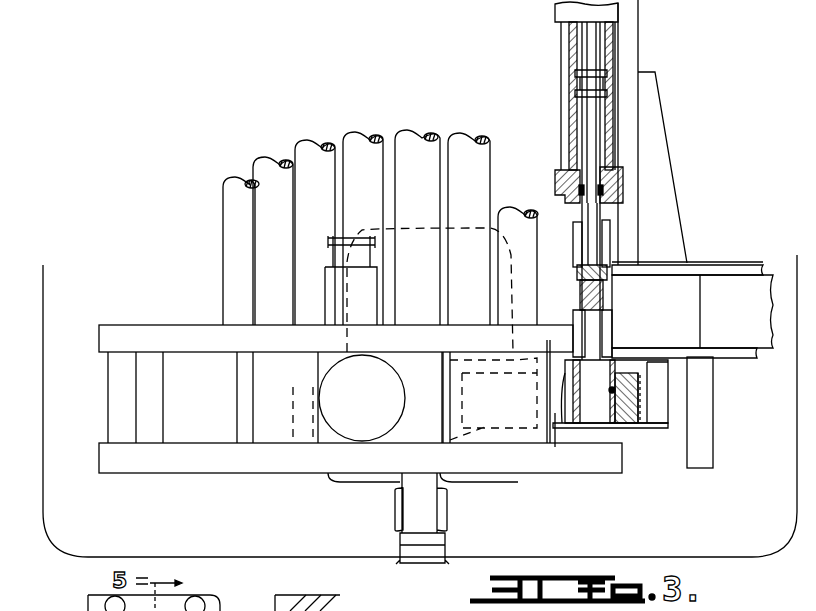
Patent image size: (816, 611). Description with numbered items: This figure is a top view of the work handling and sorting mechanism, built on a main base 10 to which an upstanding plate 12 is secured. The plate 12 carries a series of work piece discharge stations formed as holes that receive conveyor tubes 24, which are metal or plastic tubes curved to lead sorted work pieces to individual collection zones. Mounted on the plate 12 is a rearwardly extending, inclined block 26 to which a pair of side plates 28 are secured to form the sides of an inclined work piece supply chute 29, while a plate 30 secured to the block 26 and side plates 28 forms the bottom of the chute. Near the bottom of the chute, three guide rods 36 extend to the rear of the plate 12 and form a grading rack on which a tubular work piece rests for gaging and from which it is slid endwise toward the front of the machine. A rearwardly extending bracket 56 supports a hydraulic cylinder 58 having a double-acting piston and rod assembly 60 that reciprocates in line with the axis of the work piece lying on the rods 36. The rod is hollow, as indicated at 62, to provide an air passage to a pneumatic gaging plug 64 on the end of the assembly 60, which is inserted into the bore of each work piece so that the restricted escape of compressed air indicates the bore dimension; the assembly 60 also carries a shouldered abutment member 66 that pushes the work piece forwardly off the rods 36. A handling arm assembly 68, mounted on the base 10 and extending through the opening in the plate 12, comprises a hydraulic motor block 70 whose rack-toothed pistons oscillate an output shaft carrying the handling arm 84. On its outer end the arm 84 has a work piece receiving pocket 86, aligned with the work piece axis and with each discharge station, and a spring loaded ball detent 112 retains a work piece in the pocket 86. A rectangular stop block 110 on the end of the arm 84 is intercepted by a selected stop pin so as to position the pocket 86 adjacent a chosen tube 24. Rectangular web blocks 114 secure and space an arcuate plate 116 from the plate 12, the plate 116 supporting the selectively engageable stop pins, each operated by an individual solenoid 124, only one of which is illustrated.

The main base 10 is at (420, 406).
The upstanding plate 12 is at (170, 326).
The conveyor tubes 24 is at (425, 135).
The inclined block 26 is at (692, 311).
The side plates 28 is at (740, 268).
The work piece supply chute 29 is at (707, 253).
The bottom plate 30 is at (715, 352).
The guide rods 36 is at (575, 235).
The bracket 56 is at (637, 108).
The hydraulic cylinder 58 is at (568, 52).
The piston and rod assembly 60 is at (605, 82).
The hollow passage 62 is at (590, 240).
The pneumatic gaging plug 64 is at (585, 300).
The shouldered abutment member 66 is at (580, 270).
The handling arm assembly 68 is at (435, 360).
The hydraulic motor block 70 is at (416, 230).
The handling arm assembly 84 is at (555, 450).
The work piece receiving pocket 86 is at (600, 423).
The rectangular stop block 110 is at (700, 400).
The spring loaded ball detent 112 is at (612, 390).
The rectangular web blocks 114 is at (118, 403).
The arcuate plate 116 is at (205, 473).
The solenoid 124 is at (337, 290).